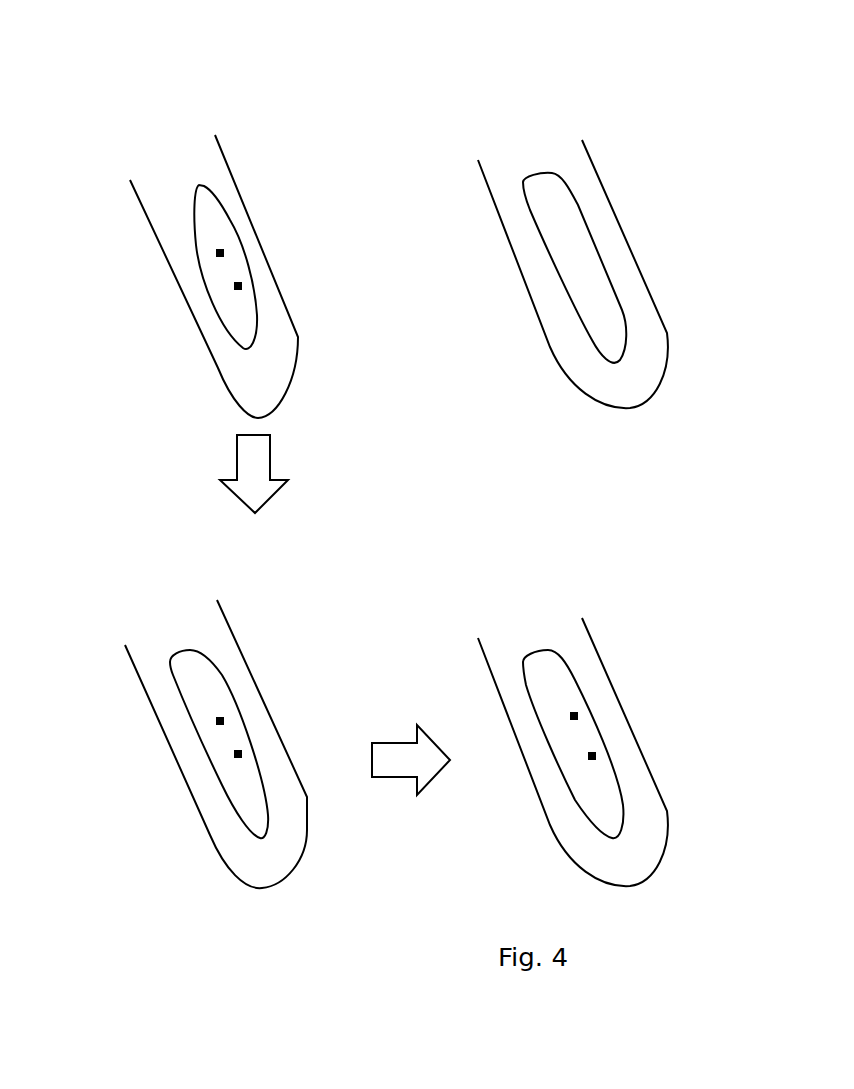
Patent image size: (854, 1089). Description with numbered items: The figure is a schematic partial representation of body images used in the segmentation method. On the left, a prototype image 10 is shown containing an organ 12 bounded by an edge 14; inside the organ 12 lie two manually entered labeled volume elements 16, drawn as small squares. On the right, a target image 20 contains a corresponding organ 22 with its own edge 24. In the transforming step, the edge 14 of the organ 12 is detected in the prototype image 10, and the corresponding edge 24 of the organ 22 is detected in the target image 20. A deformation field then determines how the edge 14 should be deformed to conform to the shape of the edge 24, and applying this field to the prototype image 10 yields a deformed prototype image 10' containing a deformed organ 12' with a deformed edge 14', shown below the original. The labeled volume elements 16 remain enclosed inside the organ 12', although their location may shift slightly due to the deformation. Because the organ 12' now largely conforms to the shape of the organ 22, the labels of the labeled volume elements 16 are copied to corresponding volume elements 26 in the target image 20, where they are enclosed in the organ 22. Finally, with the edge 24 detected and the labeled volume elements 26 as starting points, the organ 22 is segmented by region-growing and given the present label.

The prototype image 10 is at (255, 241).
The organ 12 is at (288, 241).
The edge 14 is at (167, 113).
The labeled volume elements 16 is at (217, 253).
The deformed prototype image 10' is at (259, 711).
The deformed organ 12' is at (280, 720).
The deformed edge 14' is at (167, 579).
The target image 20 is at (592, 157).
The organ 22 is at (597, 238).
The edge 24 is at (550, 172).
The labeled volume elements 26 is at (597, 756).